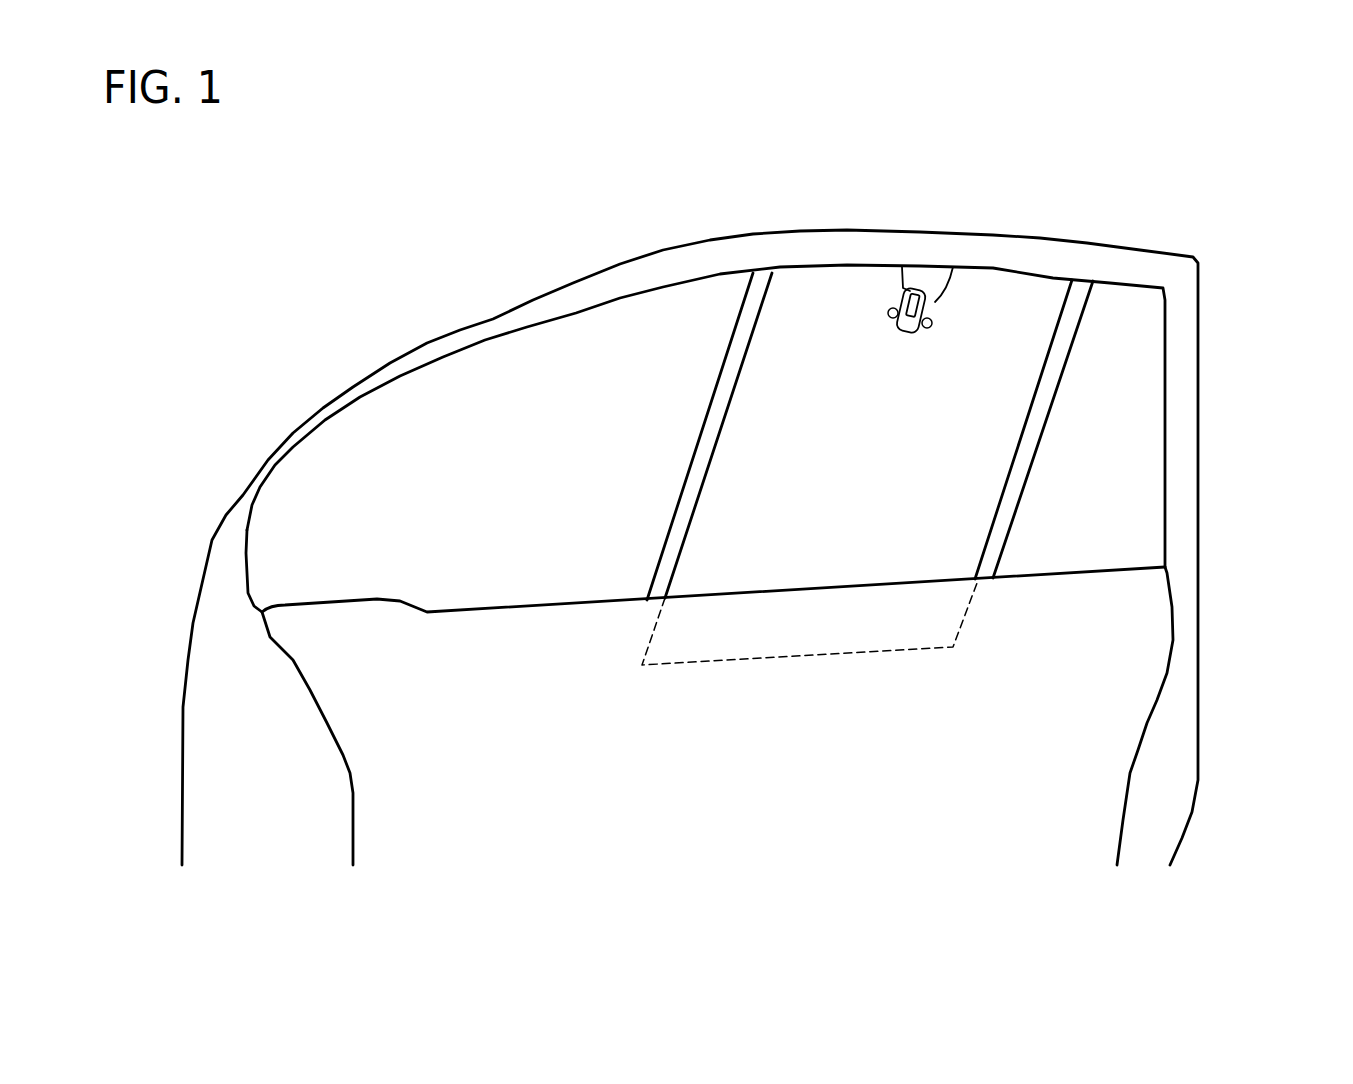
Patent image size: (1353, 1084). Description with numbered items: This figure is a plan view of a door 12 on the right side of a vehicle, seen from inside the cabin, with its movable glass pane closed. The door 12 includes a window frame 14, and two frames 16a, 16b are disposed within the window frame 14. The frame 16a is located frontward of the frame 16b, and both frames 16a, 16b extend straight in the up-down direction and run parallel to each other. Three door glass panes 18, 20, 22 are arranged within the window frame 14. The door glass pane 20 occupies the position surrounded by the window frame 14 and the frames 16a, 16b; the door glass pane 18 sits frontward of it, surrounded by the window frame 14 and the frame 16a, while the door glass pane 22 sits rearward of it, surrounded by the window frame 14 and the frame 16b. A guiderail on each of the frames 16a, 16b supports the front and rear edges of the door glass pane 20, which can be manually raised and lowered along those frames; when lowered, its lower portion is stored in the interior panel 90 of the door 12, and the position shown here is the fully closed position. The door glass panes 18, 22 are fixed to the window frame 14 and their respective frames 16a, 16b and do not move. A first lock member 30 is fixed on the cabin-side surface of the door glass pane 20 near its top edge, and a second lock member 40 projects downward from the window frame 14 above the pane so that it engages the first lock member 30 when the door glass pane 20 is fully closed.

The door 12 is at (337, 192).
The window frame 14 is at (577, 297).
The frame 16a is at (730, 360).
The frame 16b is at (1067, 332).
The door glass pane 18 is at (480, 420).
The door glass pane 20 is at (970, 357).
The door glass pane 22 is at (1140, 447).
The first lock member 30 is at (887, 297).
The second lock member 40 is at (930, 258).
The interior panel 90 is at (443, 760).